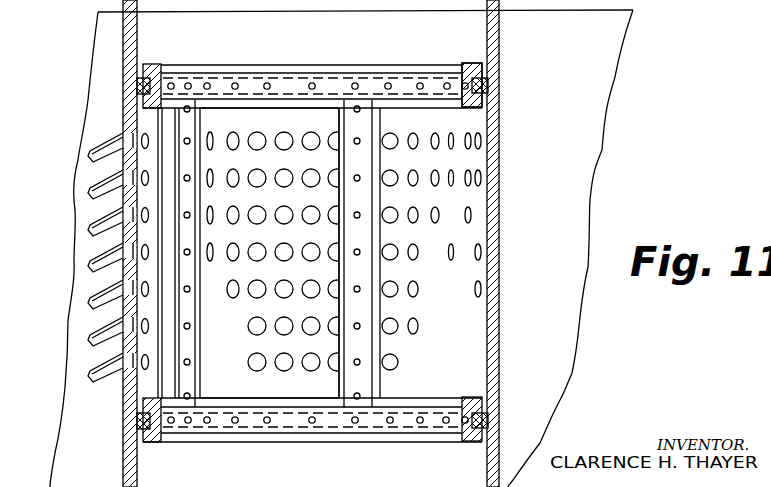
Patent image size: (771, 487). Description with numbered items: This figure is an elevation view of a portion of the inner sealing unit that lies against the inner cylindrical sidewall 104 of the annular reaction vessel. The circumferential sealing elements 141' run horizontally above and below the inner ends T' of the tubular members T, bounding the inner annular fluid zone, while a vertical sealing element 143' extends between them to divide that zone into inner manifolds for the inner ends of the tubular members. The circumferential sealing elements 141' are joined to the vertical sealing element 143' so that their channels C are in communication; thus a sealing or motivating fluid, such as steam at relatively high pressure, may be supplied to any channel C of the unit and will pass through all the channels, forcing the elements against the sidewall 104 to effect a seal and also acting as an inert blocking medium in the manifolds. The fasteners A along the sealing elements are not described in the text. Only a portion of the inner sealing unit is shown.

The inner cylindrical sidewall 104 is at (499, 55).
The tubular members T is at (78, 257).
The inner ends of the tubular members T' is at (344, 264).
The channel C is at (398, 75).
The rivets A is at (446, 423).
The vertical sealing element 143' is at (353, 213).
The circumferential sealing element 141' is at (467, 63).